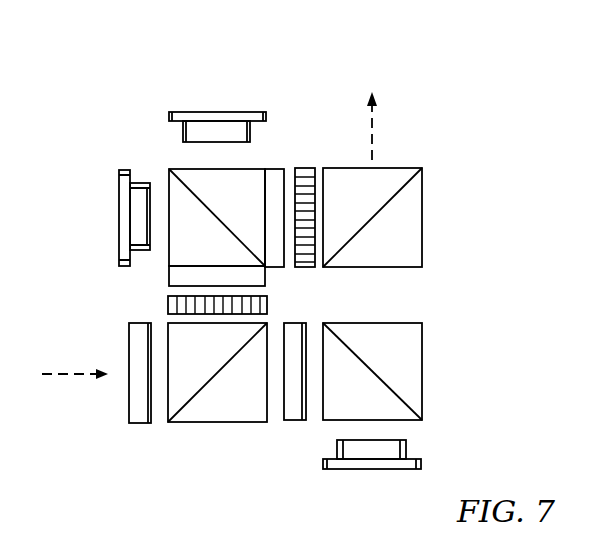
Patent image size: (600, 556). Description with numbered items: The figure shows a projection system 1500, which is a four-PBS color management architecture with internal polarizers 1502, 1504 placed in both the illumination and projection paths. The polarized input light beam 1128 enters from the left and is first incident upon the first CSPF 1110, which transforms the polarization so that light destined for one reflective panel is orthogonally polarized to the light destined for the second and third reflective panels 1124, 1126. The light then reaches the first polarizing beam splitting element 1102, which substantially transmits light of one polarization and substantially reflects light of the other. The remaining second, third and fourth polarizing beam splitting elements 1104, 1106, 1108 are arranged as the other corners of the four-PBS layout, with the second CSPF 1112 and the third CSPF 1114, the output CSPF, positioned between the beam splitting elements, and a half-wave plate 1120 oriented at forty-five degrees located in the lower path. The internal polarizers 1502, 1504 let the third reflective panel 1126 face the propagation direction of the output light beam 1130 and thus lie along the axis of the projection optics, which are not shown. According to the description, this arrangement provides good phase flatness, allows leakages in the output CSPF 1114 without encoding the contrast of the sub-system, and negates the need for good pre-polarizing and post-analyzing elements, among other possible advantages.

The projection system 1500 is at (412, 66).
The first polarizing beam splitting element 1102 is at (208, 422).
The second polarizing beam splitting element 1104 is at (422, 370).
The third polarizing beam splitting element 1106 is at (187, 168).
The fourth polarizing beam splitting element 1108 is at (422, 215).
The first CSPF 1110 is at (137, 423).
The second CSPF 1112 is at (169, 277).
The third CSPF 1114 is at (275, 168).
The half-wave plate 1120 is at (295, 420).
The second reflective panel 1124 is at (372, 470).
The third reflective panel 1126 is at (119, 220).
The polarized input light beam 1128 is at (198, 112).
The output light beam 1130 is at (372, 132).
The internal polarizer 1502 is at (168, 303).
The internal polarizer 1504 is at (305, 168).